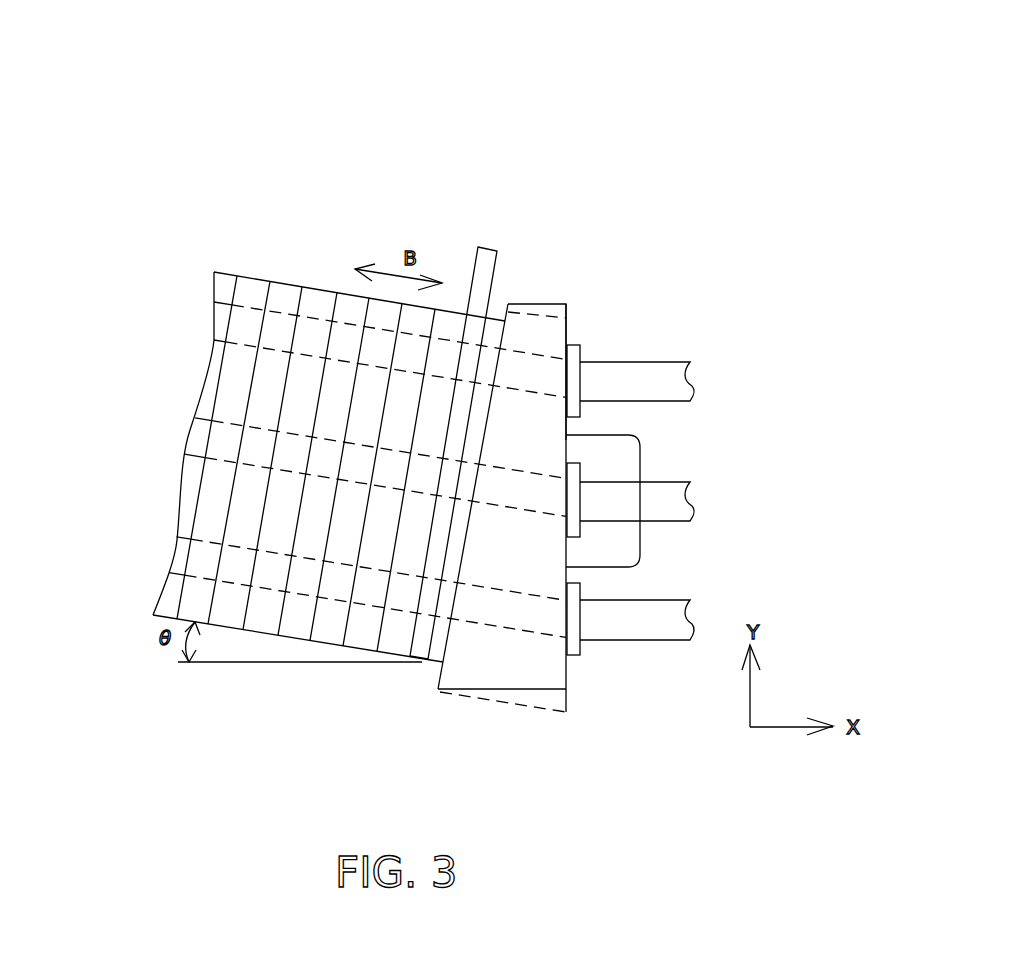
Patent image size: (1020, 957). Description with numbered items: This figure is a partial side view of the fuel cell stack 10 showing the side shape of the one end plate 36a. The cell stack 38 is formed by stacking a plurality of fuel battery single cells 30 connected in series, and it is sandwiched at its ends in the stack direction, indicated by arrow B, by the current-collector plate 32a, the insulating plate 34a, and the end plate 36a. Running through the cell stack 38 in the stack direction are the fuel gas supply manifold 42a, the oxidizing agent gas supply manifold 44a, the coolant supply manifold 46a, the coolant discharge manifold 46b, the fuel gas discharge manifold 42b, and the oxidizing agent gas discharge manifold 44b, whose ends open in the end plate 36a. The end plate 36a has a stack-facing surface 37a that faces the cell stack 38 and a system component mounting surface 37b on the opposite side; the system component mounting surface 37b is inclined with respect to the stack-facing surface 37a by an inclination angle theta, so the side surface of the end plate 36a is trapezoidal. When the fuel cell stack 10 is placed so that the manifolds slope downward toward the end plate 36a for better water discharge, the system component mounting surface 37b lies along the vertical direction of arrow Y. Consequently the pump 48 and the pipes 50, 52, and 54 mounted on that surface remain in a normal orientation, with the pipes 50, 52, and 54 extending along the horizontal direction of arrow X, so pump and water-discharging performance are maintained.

The fuel cell stack 10 is at (438, 148).
The fuel battery single cell 30 is at (318, 302).
The cell stack 38 is at (280, 282).
The insulating plate 34a is at (438, 650).
The fuel gas supply manifold 42a is at (253, 306).
The oxidizing agent gas supply manifold 44a is at (334, 305).
The coolant supply manifold 46a is at (229, 425).
The coolant discharge manifold 46b is at (324, 434).
The fuel gas discharge manifold 42b is at (213, 545).
The oxidizing agent gas discharge manifold 44b is at (314, 554).
The current-collector plate 32a is at (474, 268).
The end plate 36a is at (566, 303).
The stack-facing surface 37a is at (505, 322).
The system component mounting surface 37b is at (568, 333).
The pipe 50 is at (672, 362).
The pump 48 is at (640, 445).
The pipe 52 is at (678, 482).
The pipe 54 is at (672, 600).